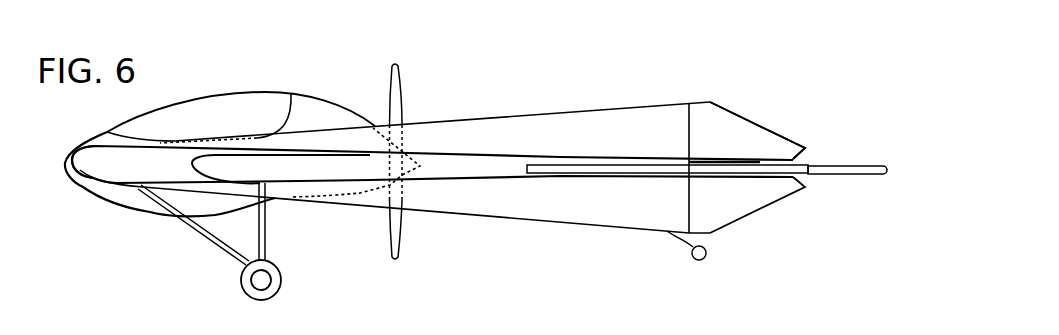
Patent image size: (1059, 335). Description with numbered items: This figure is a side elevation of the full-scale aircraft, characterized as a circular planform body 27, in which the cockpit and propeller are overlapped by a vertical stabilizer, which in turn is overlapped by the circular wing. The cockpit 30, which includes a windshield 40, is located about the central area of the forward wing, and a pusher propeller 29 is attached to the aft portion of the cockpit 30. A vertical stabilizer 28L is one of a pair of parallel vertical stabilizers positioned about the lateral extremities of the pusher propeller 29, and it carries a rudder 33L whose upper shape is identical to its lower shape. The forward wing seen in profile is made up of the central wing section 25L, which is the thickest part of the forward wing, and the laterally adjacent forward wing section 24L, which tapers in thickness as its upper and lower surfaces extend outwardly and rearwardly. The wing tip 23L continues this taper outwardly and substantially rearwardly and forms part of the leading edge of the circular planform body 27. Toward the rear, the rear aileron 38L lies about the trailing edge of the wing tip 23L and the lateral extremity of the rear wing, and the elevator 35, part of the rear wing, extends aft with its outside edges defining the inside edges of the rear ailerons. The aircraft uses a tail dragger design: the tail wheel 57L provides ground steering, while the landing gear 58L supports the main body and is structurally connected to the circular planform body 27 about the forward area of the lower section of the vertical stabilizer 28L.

The wing tip 23L is at (352, 167).
The forward wing section 24L is at (113, 172).
The central wing section 25L is at (71, 166).
The circular planform body 27 is at (808, 86).
The vertical stabilizer 28L is at (580, 122).
The pusher propeller 29 is at (397, 102).
The cockpit 30 is at (142, 198).
The rudder 33L is at (718, 125).
The elevator 35 is at (830, 167).
The rear aileron 38L is at (757, 167).
The windshield 40 is at (243, 105).
The tail wheel 57L is at (693, 258).
The landing gear 58L is at (230, 252).